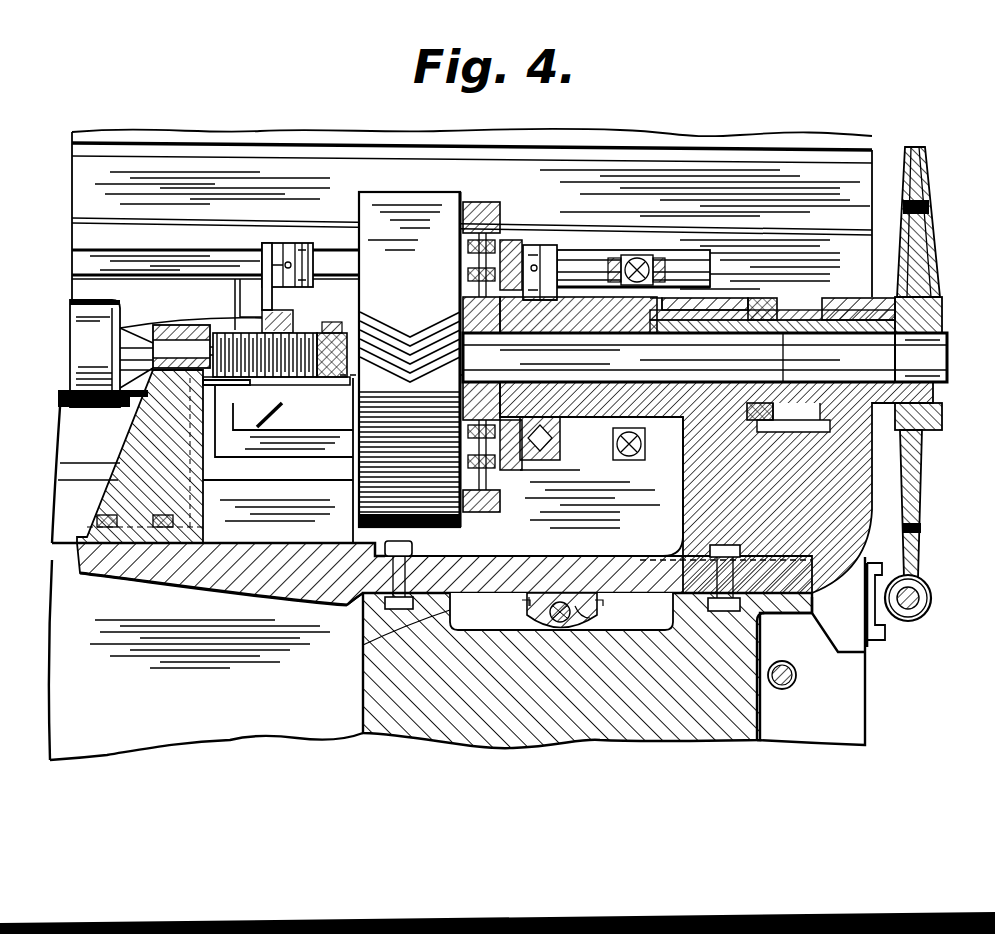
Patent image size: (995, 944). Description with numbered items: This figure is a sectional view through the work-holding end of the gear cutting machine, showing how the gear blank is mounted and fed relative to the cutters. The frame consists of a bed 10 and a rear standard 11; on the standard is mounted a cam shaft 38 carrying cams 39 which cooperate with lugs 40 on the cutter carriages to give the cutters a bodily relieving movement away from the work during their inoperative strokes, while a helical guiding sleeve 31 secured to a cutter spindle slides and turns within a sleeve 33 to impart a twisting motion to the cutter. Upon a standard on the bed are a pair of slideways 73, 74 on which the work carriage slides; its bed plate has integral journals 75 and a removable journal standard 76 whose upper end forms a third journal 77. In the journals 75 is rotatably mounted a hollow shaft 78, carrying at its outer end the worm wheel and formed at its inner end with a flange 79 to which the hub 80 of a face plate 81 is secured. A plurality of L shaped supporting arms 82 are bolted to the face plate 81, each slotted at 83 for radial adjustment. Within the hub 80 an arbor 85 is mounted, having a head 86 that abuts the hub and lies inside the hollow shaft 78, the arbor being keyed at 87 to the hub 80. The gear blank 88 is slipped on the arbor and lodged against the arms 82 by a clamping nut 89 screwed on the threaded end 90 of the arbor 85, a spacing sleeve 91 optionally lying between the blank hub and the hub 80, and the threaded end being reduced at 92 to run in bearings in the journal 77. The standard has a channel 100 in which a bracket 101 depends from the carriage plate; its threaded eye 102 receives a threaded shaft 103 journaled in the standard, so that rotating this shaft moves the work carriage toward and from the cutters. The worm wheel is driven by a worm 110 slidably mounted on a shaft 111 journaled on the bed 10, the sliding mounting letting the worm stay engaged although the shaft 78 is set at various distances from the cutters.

The bed 10 is at (372, 711).
The rear standard 11 is at (214, 145).
The helical guiding sleeve 31 is at (134, 402).
The sleeve 33 is at (86, 407).
The cam shaft 38 is at (140, 260).
The cam 39 is at (262, 291).
The lug 40 is at (278, 296).
The slideway 73 is at (352, 602).
The slideway 74 is at (779, 615).
The journal 75 is at (748, 306).
The journal standard 76 is at (102, 527).
The journal 77 is at (162, 325).
The hollow shaft 78 is at (944, 346).
The flange 79 is at (695, 298).
The hub 80 is at (597, 345).
The face plate 81 is at (512, 258).
The L shaped supporting arm 82 is at (492, 222).
The slot 83 is at (511, 240).
The arbor 85 is at (630, 333).
The head 86 is at (668, 352).
The key 87 is at (657, 292).
The gear blank 88 is at (372, 217).
The clamping nut 89 is at (340, 332).
The threaded end 90 is at (262, 378).
The spacing sleeve 91 is at (478, 238).
The reduced end 92 is at (120, 348).
The channel 100 is at (375, 651).
The bracket 101 is at (525, 598).
The threaded eye 102 is at (552, 610).
The threaded shaft 103 is at (576, 610).
The worm 110 is at (932, 596).
The shaft 111 is at (916, 606).